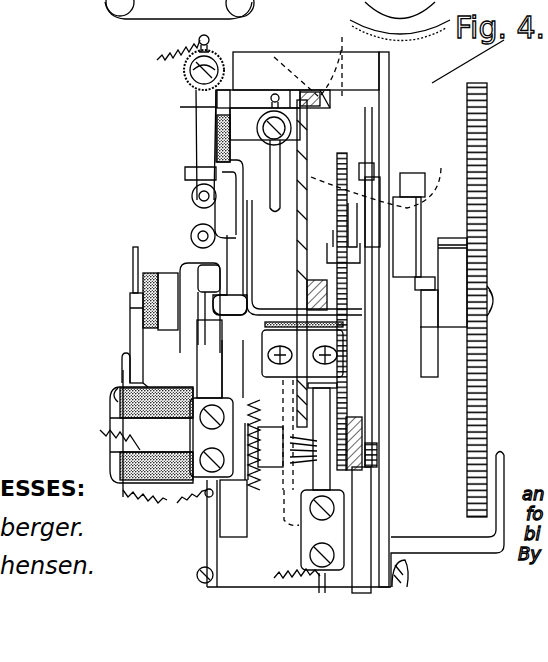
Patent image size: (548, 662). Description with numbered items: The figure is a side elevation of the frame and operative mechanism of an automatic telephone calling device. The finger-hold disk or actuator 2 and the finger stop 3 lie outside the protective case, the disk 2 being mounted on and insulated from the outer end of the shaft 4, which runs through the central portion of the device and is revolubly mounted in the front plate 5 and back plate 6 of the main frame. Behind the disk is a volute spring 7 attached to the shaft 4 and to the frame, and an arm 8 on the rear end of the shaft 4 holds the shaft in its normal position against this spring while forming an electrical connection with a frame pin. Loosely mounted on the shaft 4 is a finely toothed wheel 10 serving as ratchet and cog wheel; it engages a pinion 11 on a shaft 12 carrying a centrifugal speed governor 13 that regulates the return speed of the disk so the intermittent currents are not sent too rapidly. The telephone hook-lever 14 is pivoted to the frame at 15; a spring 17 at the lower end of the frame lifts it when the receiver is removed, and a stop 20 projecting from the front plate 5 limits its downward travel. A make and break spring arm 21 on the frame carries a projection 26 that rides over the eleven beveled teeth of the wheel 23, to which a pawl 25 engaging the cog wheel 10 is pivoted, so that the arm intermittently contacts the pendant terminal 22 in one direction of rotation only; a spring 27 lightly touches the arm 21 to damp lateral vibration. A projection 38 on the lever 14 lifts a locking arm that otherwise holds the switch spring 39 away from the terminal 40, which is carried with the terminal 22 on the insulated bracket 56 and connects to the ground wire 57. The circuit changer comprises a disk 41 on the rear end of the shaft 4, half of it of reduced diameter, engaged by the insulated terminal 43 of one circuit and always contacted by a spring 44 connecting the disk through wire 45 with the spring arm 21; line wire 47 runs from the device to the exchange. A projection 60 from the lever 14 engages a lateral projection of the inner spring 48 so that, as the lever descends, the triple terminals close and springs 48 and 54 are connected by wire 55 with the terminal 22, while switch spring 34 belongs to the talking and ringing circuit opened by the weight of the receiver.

The finger-hold disk 2 is at (487, 160).
The finger stop 3 is at (457, 520).
The shaft 4 is at (257, 292).
The front plate 5 is at (389, 80).
The back plate 6 is at (172, 2).
The volute spring 7 is at (405, 185).
The arm 8 is at (191, 232).
The wheel 10 is at (343, 153).
The pinion 11 is at (305, 450).
The shaft 12 is at (268, 492).
The centrifugal speed governor 13 is at (230, 527).
The telephone hook-lever 14 is at (355, 393).
The pivot 15 is at (376, 300).
The spring 17 is at (371, 525).
The stop 20 is at (365, 165).
The spring arm 21 is at (308, 61).
The pendant terminal 22 is at (268, 200).
The wheel 23 is at (222, 166).
The pawl 25 is at (400, 240).
The projection 26 is at (385, 174).
The spring 27 is at (245, 97).
The switch spring 34 is at (366, 440).
The projection 38 is at (215, 143).
The switch spring 39 is at (207, 120).
The terminal 40 is at (185, 173).
The disk 41 is at (133, 262).
The terminal 43 is at (130, 318).
The spring 44 is at (208, 368).
The wire 45 is at (167, 500).
The line wire 47 is at (100, 430).
The switch spring 48 is at (200, 253).
The switch spring 54 is at (150, 385).
The wire 55 is at (185, 108).
The bracket 56 is at (243, 128).
The ground wire 57 is at (157, 60).
The projection 60 is at (223, 305).